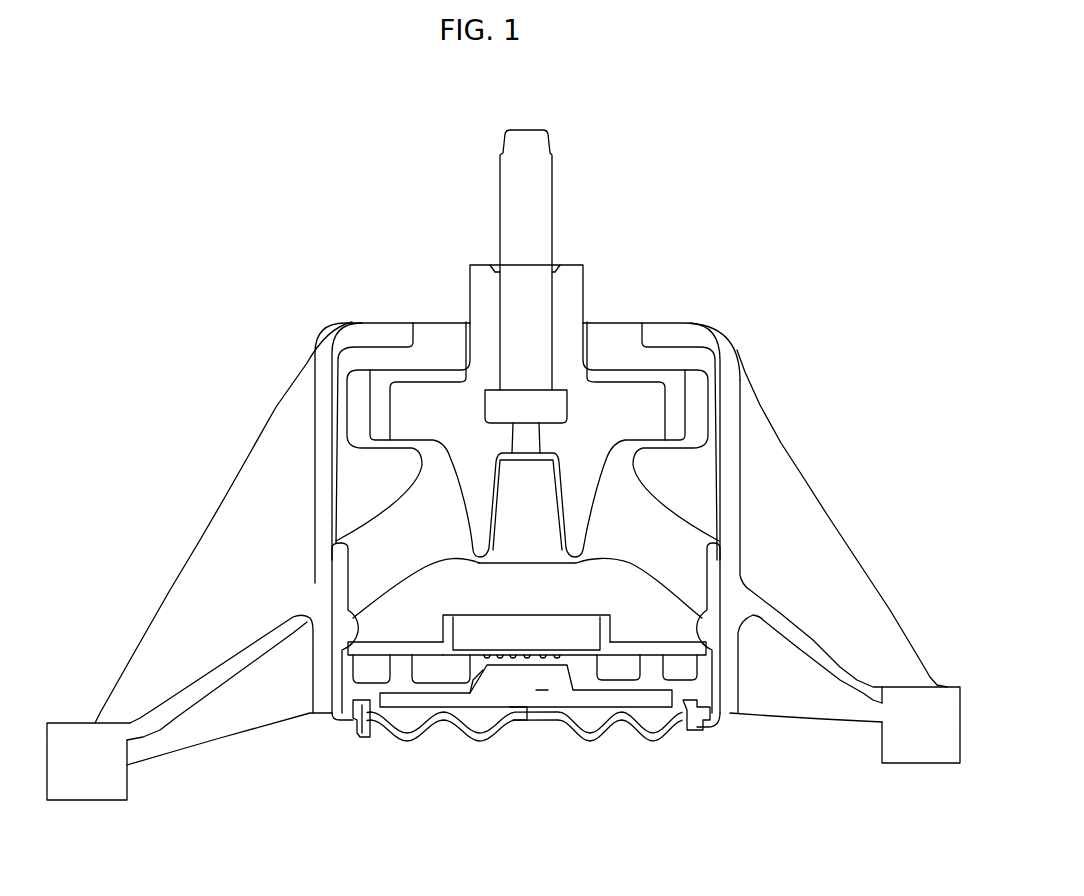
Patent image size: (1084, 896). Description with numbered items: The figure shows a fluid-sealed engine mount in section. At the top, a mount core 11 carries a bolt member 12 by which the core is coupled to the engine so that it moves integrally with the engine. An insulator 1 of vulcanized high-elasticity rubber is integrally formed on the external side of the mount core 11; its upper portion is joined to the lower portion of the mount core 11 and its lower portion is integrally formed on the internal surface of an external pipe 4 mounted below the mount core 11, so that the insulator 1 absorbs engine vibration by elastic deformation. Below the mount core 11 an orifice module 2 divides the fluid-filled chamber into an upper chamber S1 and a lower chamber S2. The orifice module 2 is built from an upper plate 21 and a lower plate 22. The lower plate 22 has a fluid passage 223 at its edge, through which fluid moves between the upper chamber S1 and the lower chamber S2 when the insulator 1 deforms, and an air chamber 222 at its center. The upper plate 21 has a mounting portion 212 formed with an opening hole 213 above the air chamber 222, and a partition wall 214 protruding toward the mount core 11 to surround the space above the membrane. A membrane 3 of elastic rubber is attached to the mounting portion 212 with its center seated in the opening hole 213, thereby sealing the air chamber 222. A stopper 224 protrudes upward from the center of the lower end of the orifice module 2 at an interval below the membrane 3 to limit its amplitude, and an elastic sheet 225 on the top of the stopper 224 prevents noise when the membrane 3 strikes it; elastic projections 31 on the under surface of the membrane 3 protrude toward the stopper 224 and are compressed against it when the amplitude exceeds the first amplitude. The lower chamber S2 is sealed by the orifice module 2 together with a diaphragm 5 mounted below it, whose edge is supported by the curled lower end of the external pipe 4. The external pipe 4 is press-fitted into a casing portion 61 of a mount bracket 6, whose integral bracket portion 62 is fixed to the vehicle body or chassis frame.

The insulator 1 is at (667, 503).
The mount core 11 is at (628, 375).
The bolt member 12 is at (538, 213).
The orifice module 2 is at (903, 537).
The upper plate 21 is at (516, 661).
The mounting portion 212 is at (587, 632).
The opening hole 213 is at (592, 650).
The partition wall 214 is at (447, 627).
The lower plate 22 is at (635, 683).
The air chamber 222 is at (433, 668).
The fluid passage 223 is at (377, 668).
The stopper 224 is at (537, 672).
The elastic sheet 225 is at (537, 640).
The membrane 3 is at (500, 647).
The elastic projections 31 is at (510, 672).
The external pipe 4 is at (330, 710).
The diaphragm 5 is at (665, 725).
The mount bracket 6 is at (123, 495).
The casing portion 61 is at (330, 517).
The bracket portion 62 is at (67, 737).
The upper chamber S1 is at (693, 567).
The lower chamber S2 is at (530, 688).